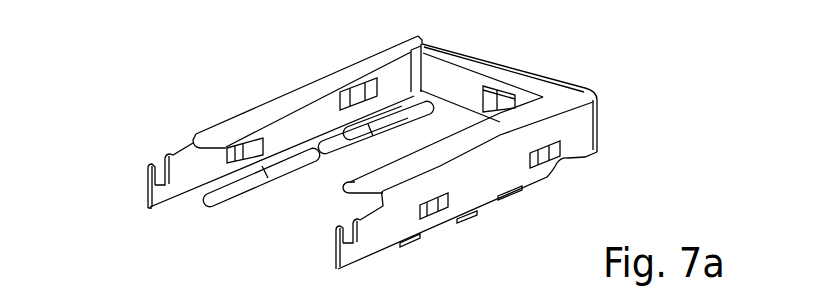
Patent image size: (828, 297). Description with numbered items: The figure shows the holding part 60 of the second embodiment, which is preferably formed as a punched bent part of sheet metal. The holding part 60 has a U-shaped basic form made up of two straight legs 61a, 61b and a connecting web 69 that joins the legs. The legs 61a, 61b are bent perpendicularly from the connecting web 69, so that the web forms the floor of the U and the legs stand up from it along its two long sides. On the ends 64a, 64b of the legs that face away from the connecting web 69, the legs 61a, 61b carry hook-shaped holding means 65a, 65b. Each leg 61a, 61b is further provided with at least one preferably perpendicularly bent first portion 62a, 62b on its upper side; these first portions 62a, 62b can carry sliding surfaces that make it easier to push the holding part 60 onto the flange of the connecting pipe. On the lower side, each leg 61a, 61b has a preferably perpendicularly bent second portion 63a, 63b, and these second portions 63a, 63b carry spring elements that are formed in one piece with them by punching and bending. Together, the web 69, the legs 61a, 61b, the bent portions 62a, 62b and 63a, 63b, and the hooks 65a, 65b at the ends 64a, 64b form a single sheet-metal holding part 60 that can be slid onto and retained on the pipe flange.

The holding part 60 is at (549, 61).
The leg 61a is at (480, 183).
The leg 61b is at (302, 117).
The first portion 62a is at (518, 116).
The first portion 62b is at (255, 118).
The second portion 63a is at (541, 180).
The second portion 63b is at (318, 174).
The end 64a is at (336, 258).
The end 64b is at (147, 206).
The hook-shaped holding means 65a is at (353, 221).
The hook-shaped holding means 65b is at (165, 152).
The connecting web 69 is at (458, 88).